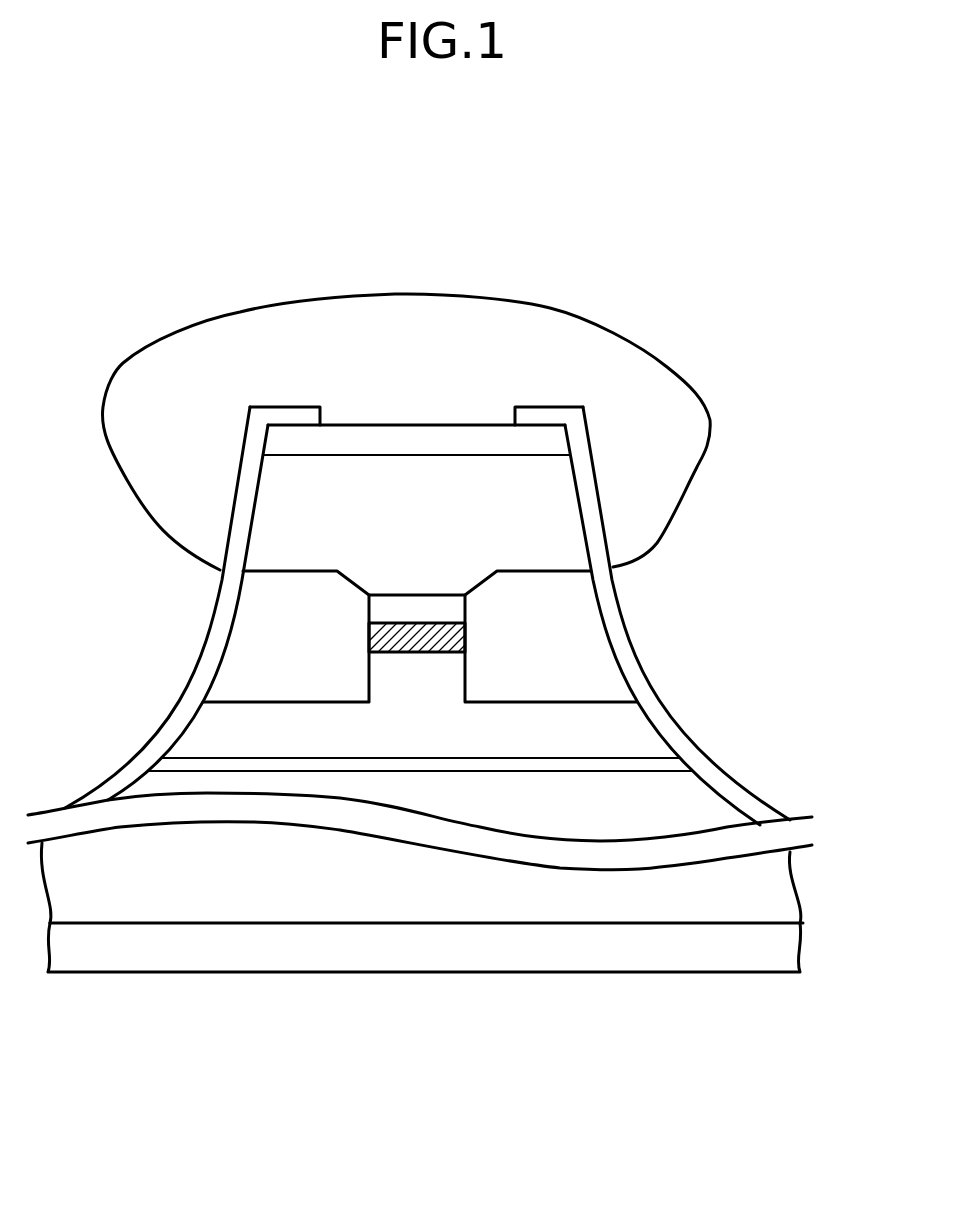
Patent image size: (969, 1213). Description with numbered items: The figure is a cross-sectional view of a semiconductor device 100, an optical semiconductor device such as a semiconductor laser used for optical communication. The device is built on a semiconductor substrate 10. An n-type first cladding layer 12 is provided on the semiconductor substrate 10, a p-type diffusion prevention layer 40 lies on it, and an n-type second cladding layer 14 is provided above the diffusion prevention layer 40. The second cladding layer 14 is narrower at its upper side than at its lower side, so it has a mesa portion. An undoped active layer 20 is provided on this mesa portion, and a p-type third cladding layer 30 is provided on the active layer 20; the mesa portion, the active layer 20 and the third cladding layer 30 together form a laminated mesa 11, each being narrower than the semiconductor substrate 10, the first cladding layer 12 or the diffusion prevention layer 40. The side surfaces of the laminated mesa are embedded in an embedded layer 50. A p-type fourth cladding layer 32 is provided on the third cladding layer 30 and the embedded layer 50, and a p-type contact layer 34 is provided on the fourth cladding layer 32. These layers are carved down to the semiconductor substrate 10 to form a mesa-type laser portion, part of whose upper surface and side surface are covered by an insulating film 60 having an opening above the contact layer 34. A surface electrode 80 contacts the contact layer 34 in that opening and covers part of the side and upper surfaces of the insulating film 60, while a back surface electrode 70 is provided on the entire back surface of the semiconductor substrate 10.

The semiconductor device 100 is at (112, 250).
The surface electrode 80 is at (417, 318).
The insulating film 60 is at (545, 415).
The contact layer 34 is at (545, 443).
The fourth cladding layer 32 is at (540, 510).
The third cladding layer 30 is at (450, 612).
The active layer 20 is at (452, 640).
The embedded layer 50 is at (273, 662).
The laminated mesa 11 is at (350, 617).
The second cladding layer 14 is at (618, 730).
The diffusion prevention layer 40 is at (163, 762).
The first cladding layer 12 is at (688, 803).
The semiconductor substrate 10 is at (777, 895).
The back surface electrode 70 is at (428, 973).